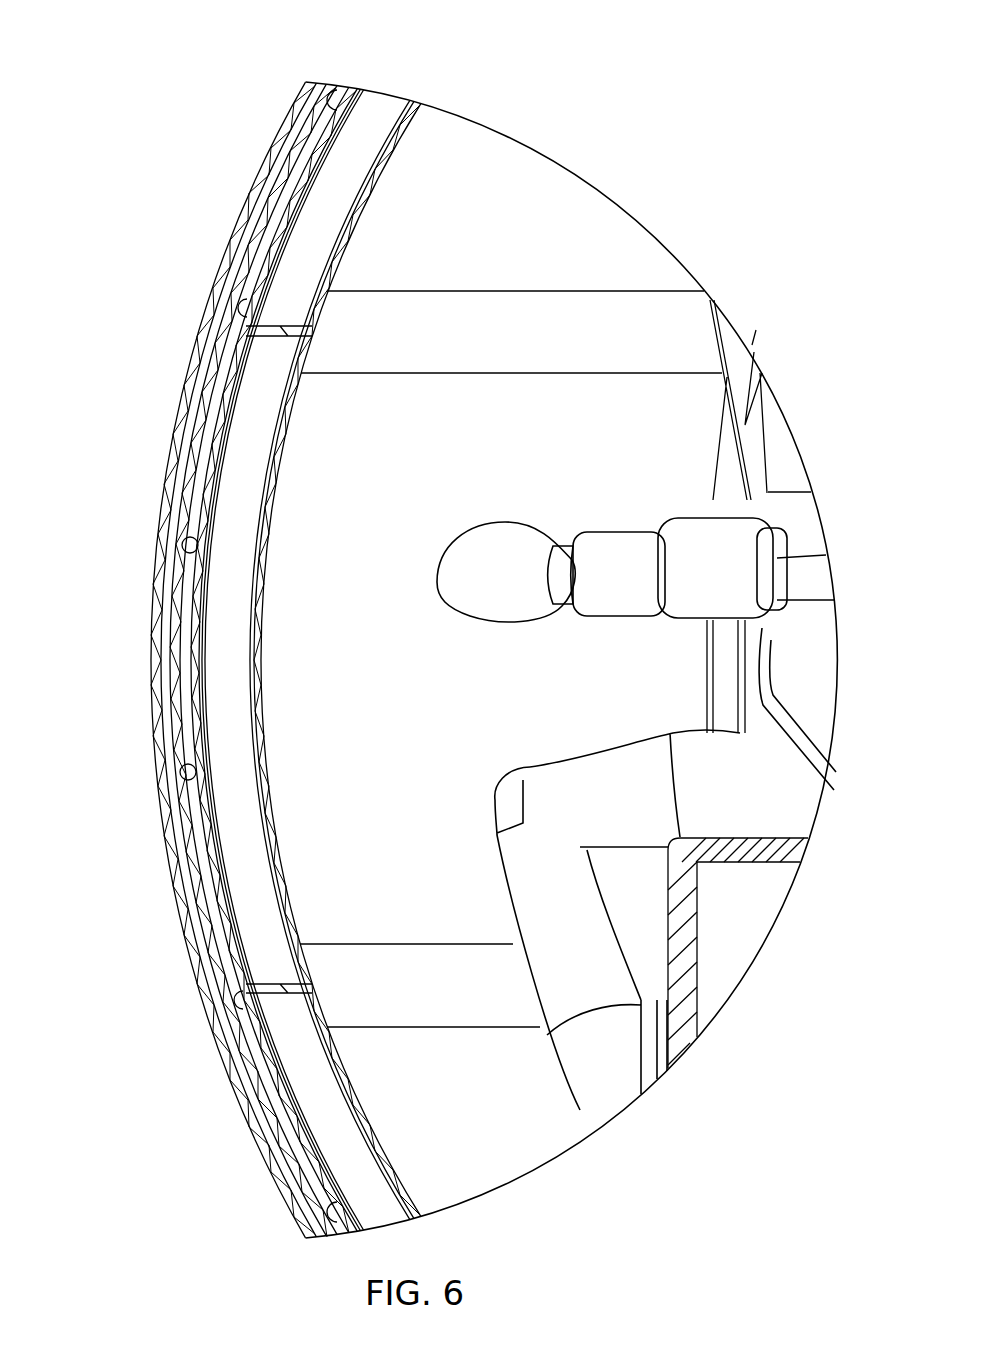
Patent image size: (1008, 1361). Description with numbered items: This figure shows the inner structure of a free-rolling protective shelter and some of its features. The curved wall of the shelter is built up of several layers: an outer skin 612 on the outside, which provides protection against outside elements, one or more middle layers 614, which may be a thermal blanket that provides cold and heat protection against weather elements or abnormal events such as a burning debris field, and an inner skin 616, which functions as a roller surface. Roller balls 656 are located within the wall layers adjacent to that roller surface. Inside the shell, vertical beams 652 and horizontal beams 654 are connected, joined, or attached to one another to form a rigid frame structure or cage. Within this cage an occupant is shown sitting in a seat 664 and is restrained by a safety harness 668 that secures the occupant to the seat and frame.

The outer skin 612 is at (302, 96).
The middle layer 614 is at (273, 163).
The inner skin 616 is at (258, 225).
The vertical beam 652 is at (224, 634).
The horizontal beam 654 is at (425, 323).
The roller ball 656 is at (185, 557).
The seat 664 is at (738, 953).
The safety harness 668 is at (727, 378).